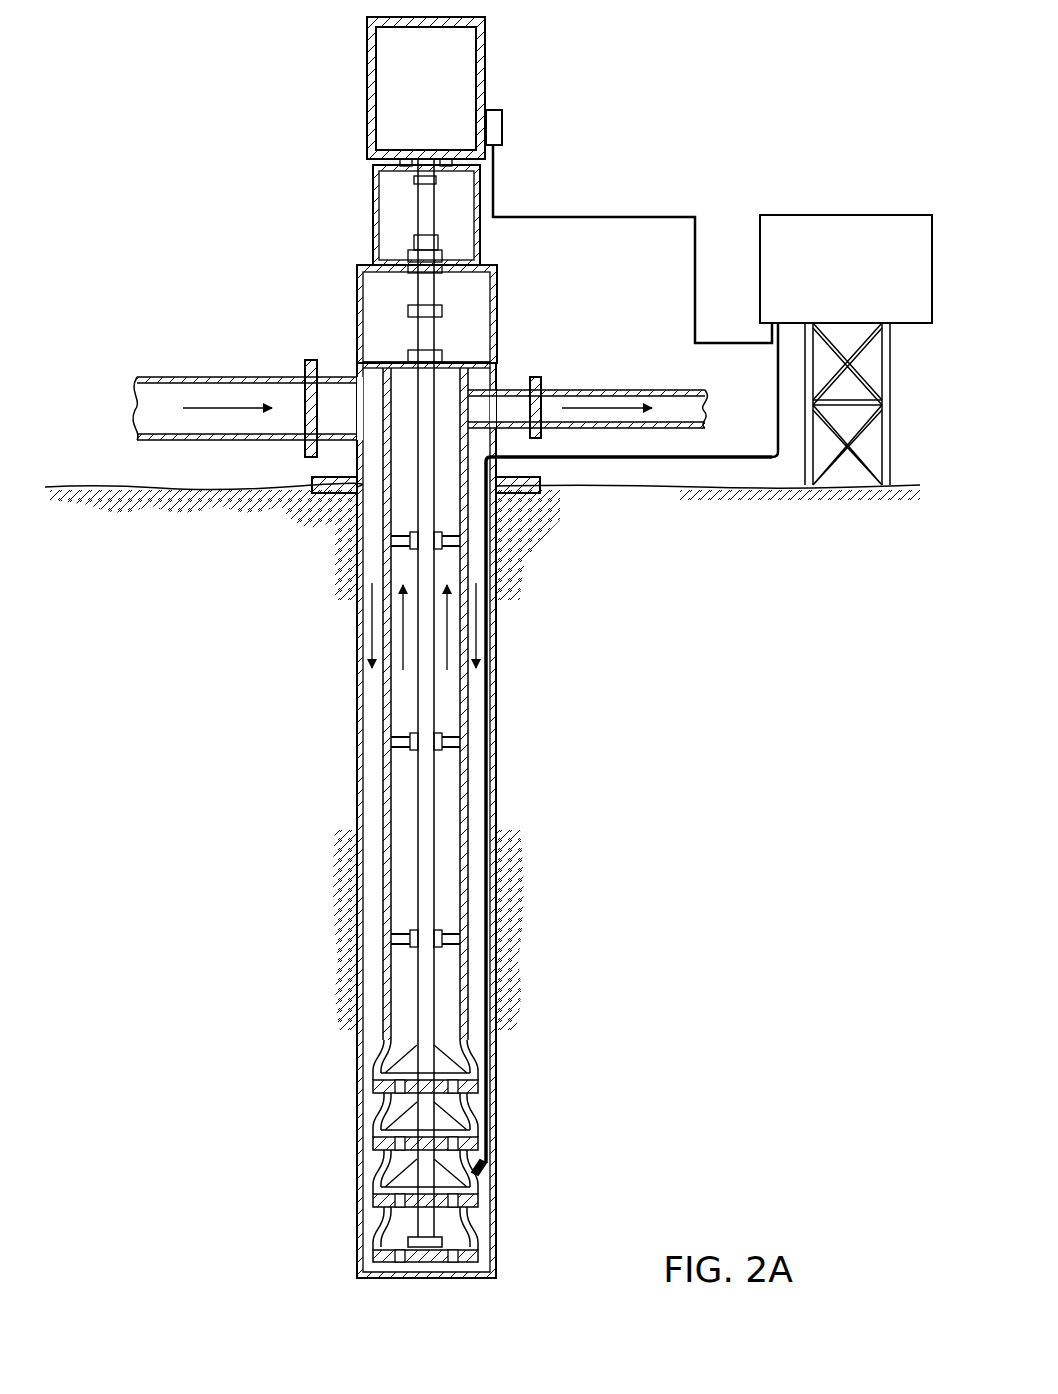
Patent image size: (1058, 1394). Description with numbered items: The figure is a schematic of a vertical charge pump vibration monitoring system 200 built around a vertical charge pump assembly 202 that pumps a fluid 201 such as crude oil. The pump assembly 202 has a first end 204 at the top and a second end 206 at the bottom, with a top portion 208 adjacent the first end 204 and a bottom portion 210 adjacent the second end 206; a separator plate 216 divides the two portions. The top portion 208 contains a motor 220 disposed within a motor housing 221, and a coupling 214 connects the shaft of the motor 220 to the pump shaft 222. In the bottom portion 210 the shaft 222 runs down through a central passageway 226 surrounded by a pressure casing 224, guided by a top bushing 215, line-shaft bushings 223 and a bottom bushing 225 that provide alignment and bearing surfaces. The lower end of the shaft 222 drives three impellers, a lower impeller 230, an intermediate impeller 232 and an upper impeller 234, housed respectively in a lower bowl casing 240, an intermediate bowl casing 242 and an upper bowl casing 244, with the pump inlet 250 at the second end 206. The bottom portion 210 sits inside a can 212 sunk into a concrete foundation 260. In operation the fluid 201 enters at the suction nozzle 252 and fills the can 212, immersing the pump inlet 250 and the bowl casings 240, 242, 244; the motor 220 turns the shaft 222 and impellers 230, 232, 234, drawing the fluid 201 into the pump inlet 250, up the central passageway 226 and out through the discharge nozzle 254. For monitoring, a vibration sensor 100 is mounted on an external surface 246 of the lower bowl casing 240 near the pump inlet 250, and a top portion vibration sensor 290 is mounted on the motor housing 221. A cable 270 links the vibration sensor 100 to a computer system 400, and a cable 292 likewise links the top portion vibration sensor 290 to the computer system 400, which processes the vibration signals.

The vibration sensor 100 is at (490, 1166).
The vertical charge pump vibration monitoring system 200 is at (651, 64).
The fluid 201 is at (212, 405).
The vertical charge pump assembly 202 is at (304, 173).
The first end 204 is at (329, 35).
The second end 206 is at (470, 1292).
The top portion 208 is at (279, 283).
The bottom portion 210 is at (263, 860).
The can 212 is at (354, 781).
The coupling 214 is at (376, 212).
The top bushing 215 is at (437, 288).
The separator plate 216 is at (323, 478).
The motor 220 is at (405, 103).
The motor housing 221 is at (488, 60).
The shaft 222 is at (426, 707).
The line-shaft bushings 223 is at (445, 543).
The pressure casing 224 is at (383, 713).
The bottom bushing 225 is at (442, 1238).
The central passageway 226 is at (448, 838).
The lower impeller 230 is at (400, 1180).
The intermediate impeller 232 is at (445, 1120).
The upper impeller 234 is at (458, 1066).
The lower bowl casing 240 is at (378, 1160).
The intermediate bowl casing 242 is at (378, 1107).
The upper bowl casing 244 is at (376, 1050).
The external surface 246 is at (478, 1182).
The pump inlet 250 is at (405, 1262).
The suction nozzle 252 is at (312, 362).
The discharge nozzle 254 is at (535, 377).
The concrete foundation 260 is at (681, 670).
The cable 270 is at (487, 768).
The top portion vibration sensor 290 is at (505, 128).
The cable 292 is at (595, 216).
The computer system 400 is at (868, 284).